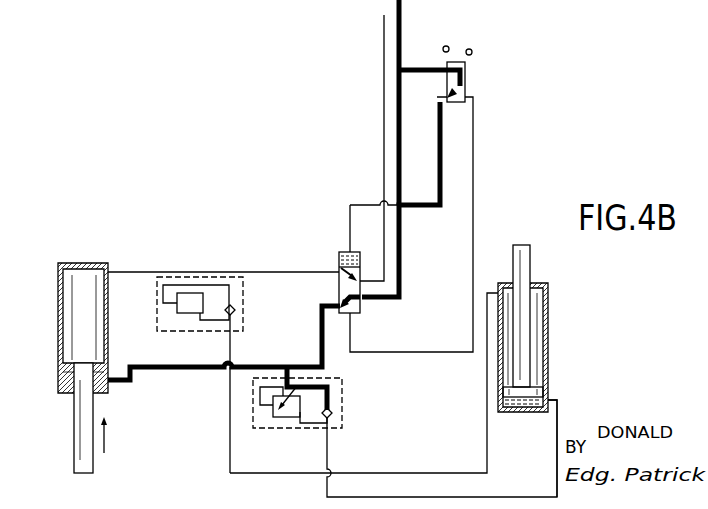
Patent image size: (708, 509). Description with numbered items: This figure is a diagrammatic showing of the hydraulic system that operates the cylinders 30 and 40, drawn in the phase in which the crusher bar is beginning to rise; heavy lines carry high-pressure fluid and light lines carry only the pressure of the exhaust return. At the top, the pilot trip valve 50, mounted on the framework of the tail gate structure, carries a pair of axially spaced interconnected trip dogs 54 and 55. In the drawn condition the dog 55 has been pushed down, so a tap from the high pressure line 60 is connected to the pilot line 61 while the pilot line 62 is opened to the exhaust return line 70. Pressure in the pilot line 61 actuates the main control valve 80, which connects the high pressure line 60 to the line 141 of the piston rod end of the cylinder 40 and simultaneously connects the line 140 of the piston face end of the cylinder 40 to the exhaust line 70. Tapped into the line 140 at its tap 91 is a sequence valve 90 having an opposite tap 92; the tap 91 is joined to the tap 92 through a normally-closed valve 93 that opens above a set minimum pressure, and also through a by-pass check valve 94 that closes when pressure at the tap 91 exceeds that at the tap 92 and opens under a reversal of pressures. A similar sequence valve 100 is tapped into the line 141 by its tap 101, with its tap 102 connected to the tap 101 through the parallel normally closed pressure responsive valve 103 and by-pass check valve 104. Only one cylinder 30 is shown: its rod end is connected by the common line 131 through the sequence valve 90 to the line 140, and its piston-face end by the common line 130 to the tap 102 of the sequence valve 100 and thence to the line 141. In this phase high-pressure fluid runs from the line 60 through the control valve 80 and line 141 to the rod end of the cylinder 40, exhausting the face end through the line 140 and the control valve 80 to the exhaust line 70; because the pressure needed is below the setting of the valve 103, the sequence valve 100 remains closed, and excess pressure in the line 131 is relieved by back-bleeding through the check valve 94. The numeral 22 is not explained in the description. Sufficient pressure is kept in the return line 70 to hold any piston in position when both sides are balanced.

The frame 22 is at (562, 0).
The cylinder 30 is at (555, 345).
The cylinder 40 is at (84, 258).
The pilot trip valve 50 is at (470, 85).
The trip dog 54 is at (446, 46).
The trip dog 55 is at (472, 52).
The high pressure line 60 is at (399, 28).
The pilot line 61 is at (403, 213).
The pilot line 62 is at (473, 165).
The exhaust return line 70 is at (384, 118).
The main control valve 80 is at (365, 312).
The sequence valve 90 is at (153, 299).
The tap 91 is at (185, 305).
The tap 92 is at (243, 331).
The normally-closed valve 93 is at (188, 315).
The check valve 94 is at (236, 310).
The sequence valve 100 is at (263, 440).
The tap 101 is at (317, 375).
The tap 102 is at (330, 430).
The normally closed pressure responsive valve 103 is at (290, 408).
The by-pass check valve 104 is at (332, 415).
The common line 130 is at (557, 433).
The common line 131 is at (487, 412).
The line 140 is at (135, 271).
The line 141 is at (173, 370).